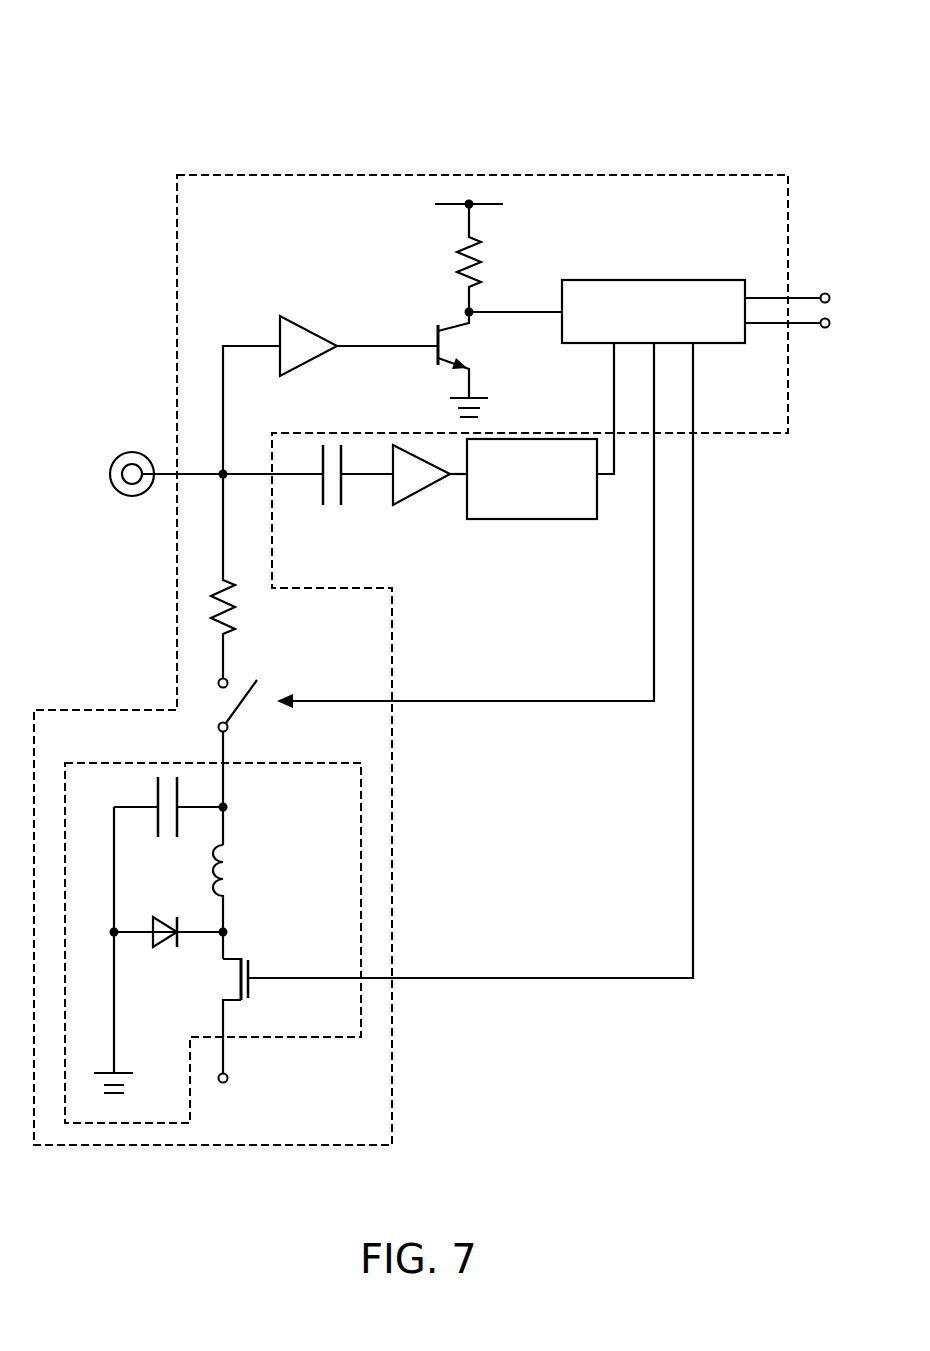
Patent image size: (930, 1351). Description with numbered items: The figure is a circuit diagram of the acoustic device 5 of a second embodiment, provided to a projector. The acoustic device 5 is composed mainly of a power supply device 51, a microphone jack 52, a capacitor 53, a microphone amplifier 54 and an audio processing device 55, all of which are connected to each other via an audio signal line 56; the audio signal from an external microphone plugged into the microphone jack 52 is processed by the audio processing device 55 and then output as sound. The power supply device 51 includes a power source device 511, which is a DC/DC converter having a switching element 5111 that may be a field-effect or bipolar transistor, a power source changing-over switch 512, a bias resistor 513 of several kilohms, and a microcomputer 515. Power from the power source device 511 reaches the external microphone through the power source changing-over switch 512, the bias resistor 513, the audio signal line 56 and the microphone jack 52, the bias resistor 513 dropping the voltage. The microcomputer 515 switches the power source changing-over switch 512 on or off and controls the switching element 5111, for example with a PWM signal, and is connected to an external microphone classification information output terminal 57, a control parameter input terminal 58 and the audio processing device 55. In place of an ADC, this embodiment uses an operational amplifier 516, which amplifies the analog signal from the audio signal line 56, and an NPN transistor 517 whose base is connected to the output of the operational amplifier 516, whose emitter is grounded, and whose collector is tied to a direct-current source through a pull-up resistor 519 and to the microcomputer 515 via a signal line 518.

The acoustic device 5 is at (605, 97).
The power supply device 51 is at (515, 175).
The microphone jack 52 is at (128, 497).
The capacitor 53 is at (340, 522).
The microphone amplifier 54 is at (412, 497).
The audio processing device 55 is at (544, 520).
The audio signal line 56 is at (250, 471).
The external microphone classification information output terminal 57 is at (824, 292).
The control parameter input terminal 58 is at (824, 329).
The power source device 511 is at (361, 792).
The power source changing-over switch 512 is at (258, 690).
The bias resistor 513 is at (226, 614).
The microcomputer 515 is at (683, 280).
The operational amplifier 516 is at (325, 340).
The NPN transistor 517 is at (410, 300).
The signal line 518 is at (541, 311).
The pull-up resistor 519 is at (480, 257).
The switching element 5111 is at (254, 944).